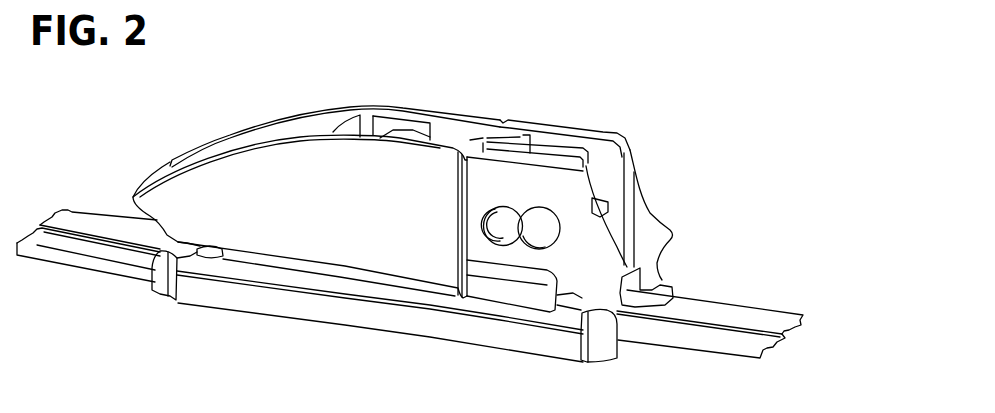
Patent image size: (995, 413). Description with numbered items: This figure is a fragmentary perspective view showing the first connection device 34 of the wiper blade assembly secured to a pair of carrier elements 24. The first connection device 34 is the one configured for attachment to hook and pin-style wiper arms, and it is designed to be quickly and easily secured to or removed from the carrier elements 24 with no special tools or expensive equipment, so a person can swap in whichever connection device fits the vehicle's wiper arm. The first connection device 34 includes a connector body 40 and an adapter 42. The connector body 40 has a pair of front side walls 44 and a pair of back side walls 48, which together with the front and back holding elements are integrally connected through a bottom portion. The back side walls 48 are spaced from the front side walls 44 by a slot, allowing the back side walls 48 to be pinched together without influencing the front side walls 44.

The carrier elements 24 is at (741, 307).
The first connection device 34 is at (687, 92).
The connector body 40 is at (212, 134).
The adapter 42 is at (475, 139).
The front side walls 44 is at (285, 124).
The back side walls 48 is at (637, 182).